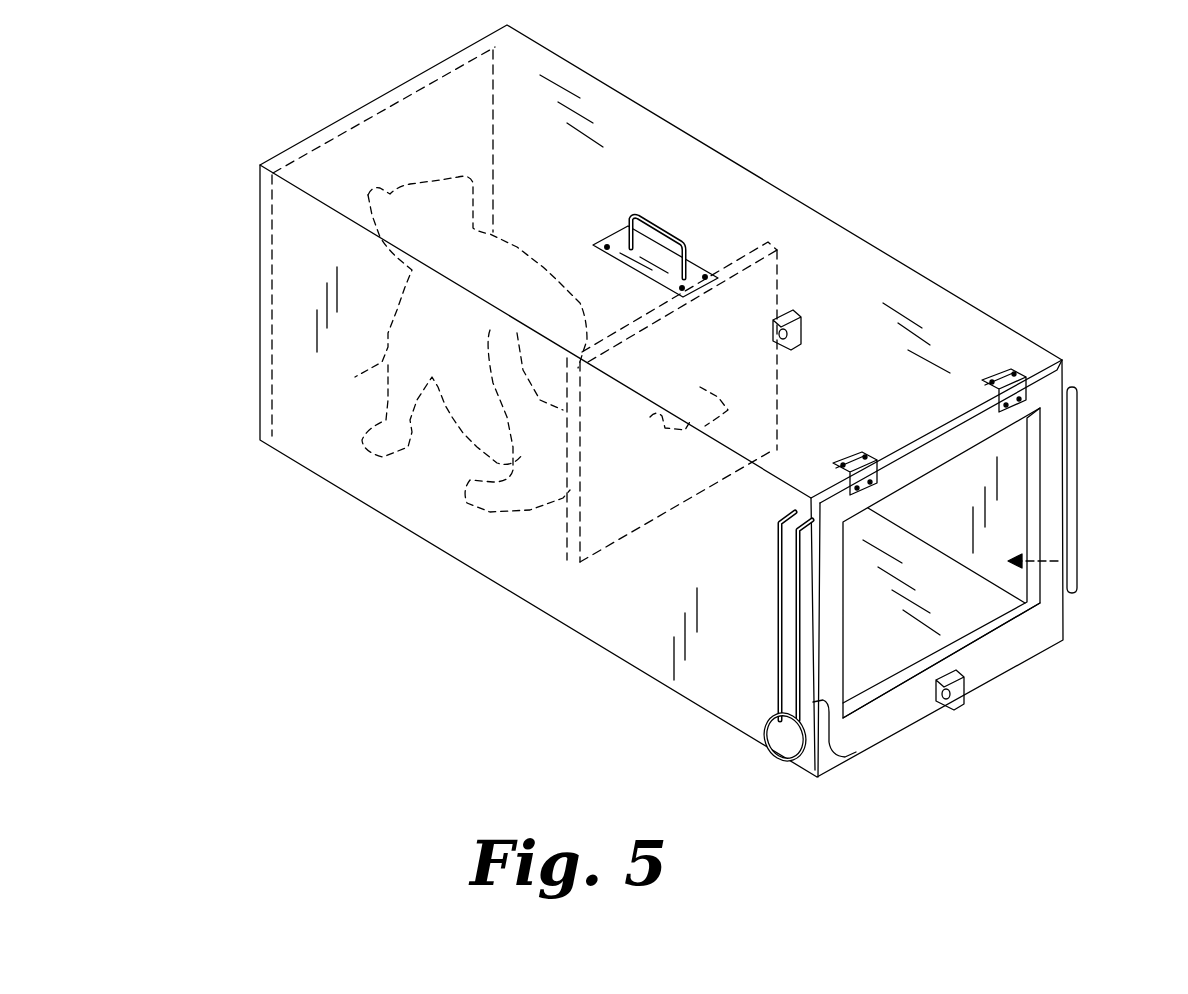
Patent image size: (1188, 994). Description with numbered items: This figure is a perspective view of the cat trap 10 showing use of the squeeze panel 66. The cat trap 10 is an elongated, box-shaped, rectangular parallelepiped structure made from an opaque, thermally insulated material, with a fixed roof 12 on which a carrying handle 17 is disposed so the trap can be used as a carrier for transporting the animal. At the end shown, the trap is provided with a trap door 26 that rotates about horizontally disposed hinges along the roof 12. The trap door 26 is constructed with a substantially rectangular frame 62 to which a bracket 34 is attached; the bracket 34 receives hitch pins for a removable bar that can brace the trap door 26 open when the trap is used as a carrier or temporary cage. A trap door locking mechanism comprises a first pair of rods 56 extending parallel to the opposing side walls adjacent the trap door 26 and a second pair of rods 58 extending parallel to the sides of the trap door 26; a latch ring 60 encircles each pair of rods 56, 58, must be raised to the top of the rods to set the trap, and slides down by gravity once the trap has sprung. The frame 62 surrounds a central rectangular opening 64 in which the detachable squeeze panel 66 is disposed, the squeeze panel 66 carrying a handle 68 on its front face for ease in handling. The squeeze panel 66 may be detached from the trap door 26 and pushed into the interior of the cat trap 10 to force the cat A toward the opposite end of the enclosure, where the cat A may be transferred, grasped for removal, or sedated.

The cat trap 10 is at (360, 625).
The roof 12 is at (607, 113).
The carrying handle 17 is at (660, 218).
The trap door 26 is at (1022, 645).
The bracket 34 is at (802, 330).
The first pair of rods 56 is at (770, 553).
The second pair of rods 58 is at (1078, 500).
The latch ring 60 is at (778, 762).
The rectangular frame 62 is at (900, 718).
The central rectangular opening 64 is at (1062, 562).
The squeeze panel 66 is at (554, 549).
The handle 68 is at (650, 440).
The cat A is at (465, 425).